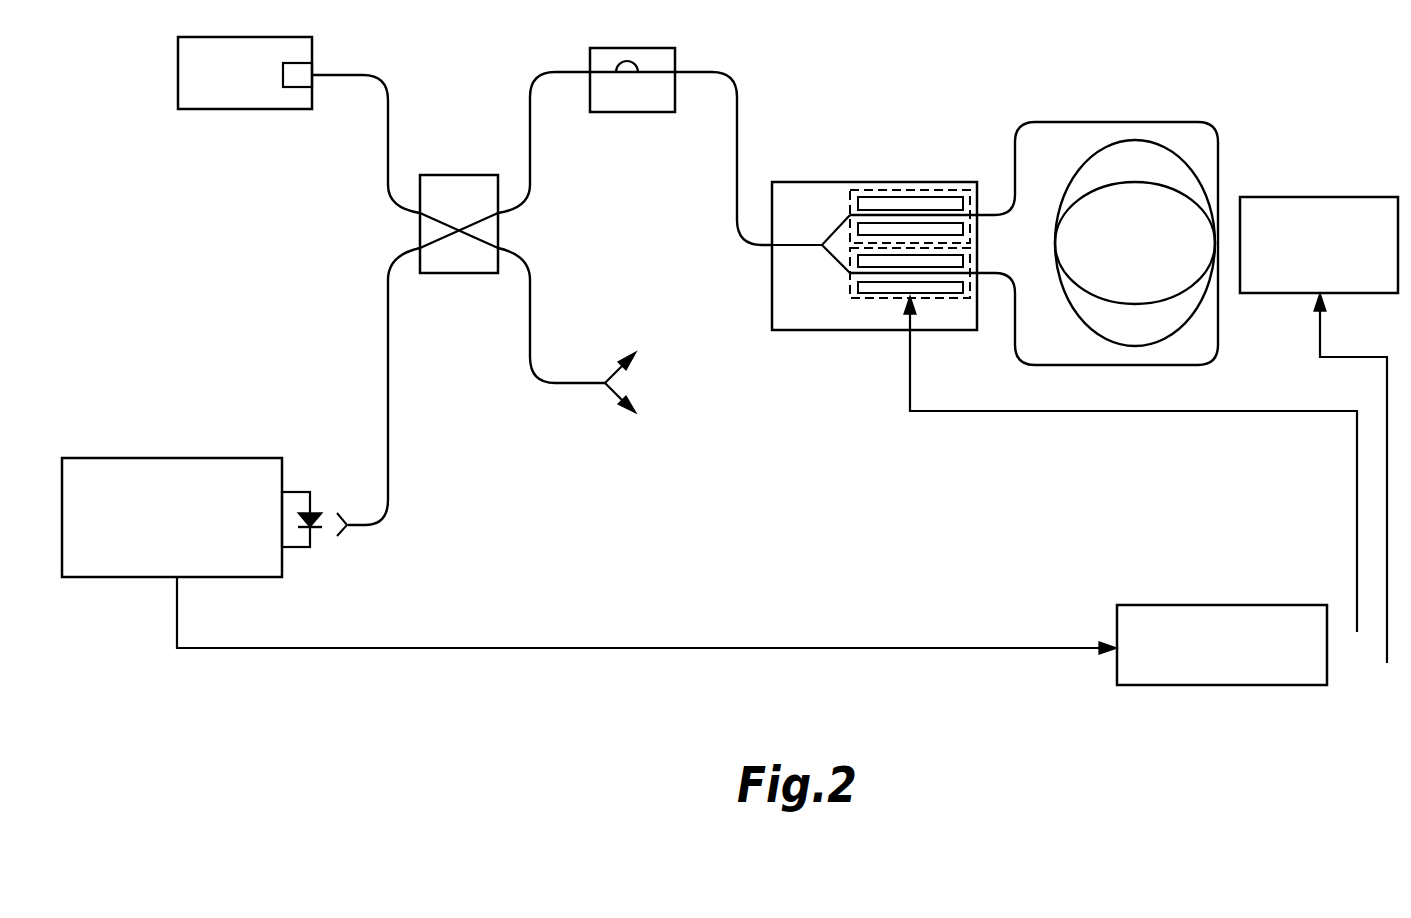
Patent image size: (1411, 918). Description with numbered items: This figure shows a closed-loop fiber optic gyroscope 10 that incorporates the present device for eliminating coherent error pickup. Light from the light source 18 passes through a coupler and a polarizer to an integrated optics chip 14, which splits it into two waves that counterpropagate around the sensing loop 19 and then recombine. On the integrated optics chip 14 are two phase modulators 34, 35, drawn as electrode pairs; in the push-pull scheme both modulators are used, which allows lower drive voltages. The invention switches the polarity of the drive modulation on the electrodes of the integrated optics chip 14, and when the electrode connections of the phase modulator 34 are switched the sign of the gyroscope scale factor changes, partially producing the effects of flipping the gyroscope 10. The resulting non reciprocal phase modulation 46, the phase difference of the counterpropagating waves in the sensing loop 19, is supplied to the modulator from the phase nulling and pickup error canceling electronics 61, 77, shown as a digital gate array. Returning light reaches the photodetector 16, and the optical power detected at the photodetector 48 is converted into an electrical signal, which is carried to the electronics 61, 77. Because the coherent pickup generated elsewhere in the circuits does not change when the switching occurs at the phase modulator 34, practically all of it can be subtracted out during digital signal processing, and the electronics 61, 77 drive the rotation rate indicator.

The fiber optic gyroscope 10 is at (872, 69).
The integrated optics chip 14 is at (874, 262).
The photodetector 16 is at (195, 458).
The light source 18 is at (250, 109).
The sensing loop 19 is at (1055, 243).
The phase modulator 34 is at (875, 300).
The phase modulator 35 is at (933, 182).
The non reciprocal phase modulation 46 is at (1065, 412).
The optical power detected at photodetector 48 is at (430, 648).
The phase nulling and pickup error canceling electronics 61 is at (1222, 672).
The phase nulling and pickup error canceling electronics 77 is at (1235, 685).